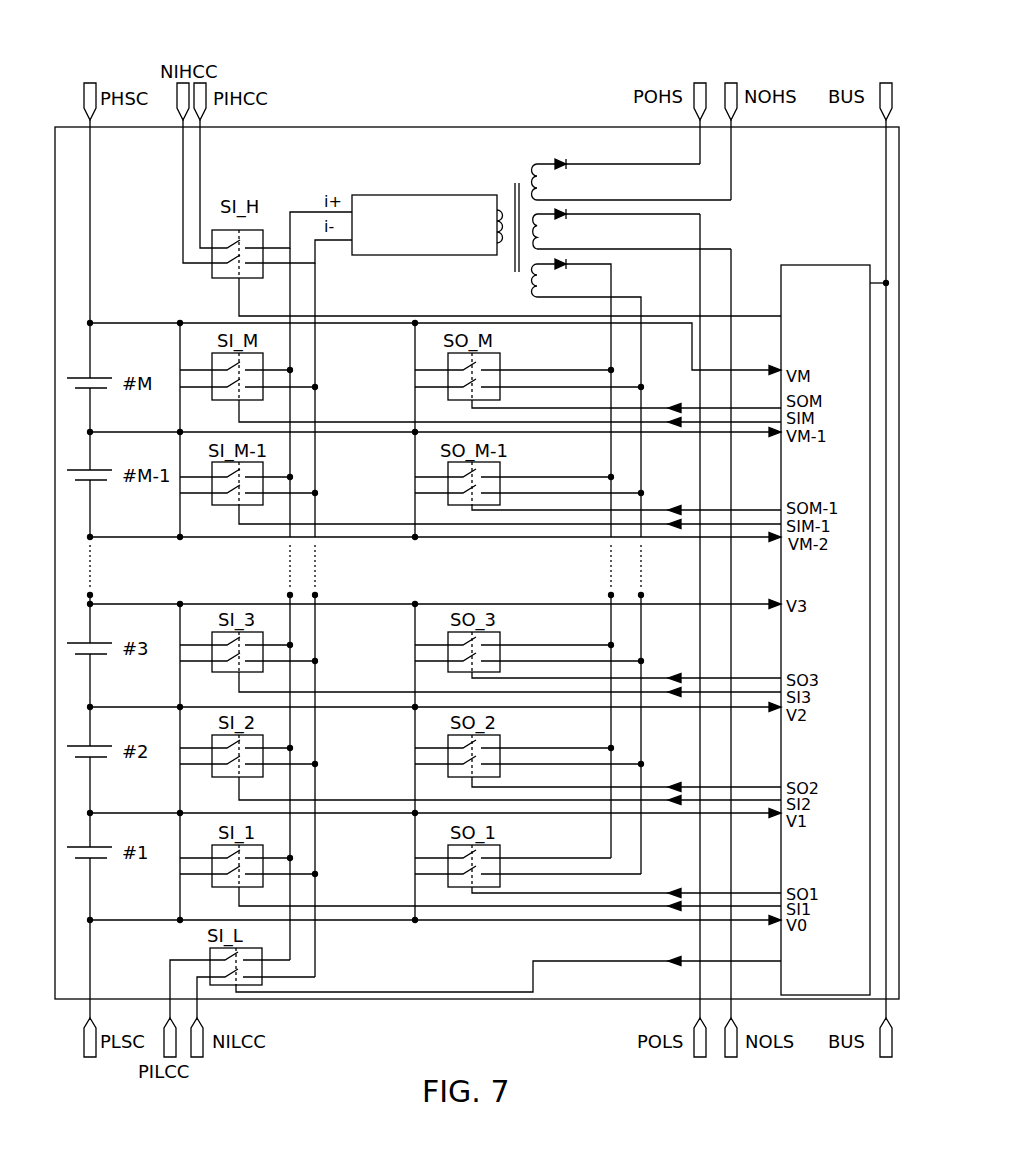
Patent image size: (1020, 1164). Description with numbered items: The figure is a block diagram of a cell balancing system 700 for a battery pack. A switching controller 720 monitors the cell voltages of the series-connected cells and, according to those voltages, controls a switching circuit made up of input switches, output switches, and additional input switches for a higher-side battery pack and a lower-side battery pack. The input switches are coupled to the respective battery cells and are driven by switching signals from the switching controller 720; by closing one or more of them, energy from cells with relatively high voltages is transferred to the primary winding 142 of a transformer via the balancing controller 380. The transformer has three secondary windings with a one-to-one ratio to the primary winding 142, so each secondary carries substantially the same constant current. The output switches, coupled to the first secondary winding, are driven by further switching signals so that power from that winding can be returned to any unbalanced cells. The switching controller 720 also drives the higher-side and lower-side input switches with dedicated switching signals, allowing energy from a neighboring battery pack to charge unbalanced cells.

The cell balancing system 700 is at (145, 74).
The balancing controller 380 is at (438, 236).
The primary winding 142 is at (505, 212).
The switching controller 720 is at (817, 265).